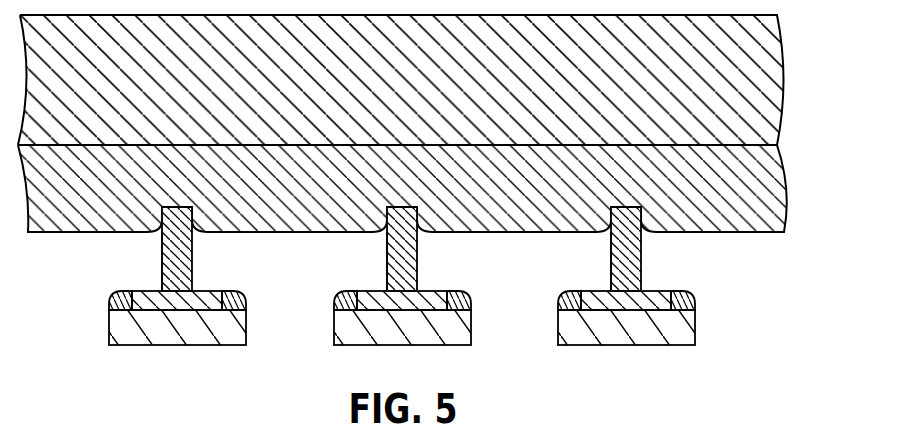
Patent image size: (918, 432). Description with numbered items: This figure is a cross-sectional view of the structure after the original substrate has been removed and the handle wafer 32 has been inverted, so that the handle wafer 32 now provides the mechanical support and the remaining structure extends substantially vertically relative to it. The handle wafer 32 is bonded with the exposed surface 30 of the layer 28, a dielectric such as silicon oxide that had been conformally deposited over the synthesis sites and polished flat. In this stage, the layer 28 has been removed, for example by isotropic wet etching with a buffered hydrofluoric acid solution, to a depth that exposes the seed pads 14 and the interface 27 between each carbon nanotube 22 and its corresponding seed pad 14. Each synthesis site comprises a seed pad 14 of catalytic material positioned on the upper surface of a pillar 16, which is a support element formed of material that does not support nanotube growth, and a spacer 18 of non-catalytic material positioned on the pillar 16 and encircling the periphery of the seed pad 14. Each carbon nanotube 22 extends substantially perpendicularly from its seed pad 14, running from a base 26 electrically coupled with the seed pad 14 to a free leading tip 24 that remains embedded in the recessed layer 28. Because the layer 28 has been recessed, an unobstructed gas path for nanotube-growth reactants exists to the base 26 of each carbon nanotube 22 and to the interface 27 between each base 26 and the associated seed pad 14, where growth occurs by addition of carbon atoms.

The seed pad 14 is at (210, 290).
The pillar 16 is at (176, 345).
The spacer 18 is at (232, 290).
The carbon nanotube 22 is at (163, 216).
The leading tip 24 is at (176, 206).
The base 26 is at (163, 274).
The interface 27 is at (162, 251).
The layer 28 is at (784, 203).
The exposed surface 30 is at (533, 145).
The handle wafer 32 is at (784, 90).